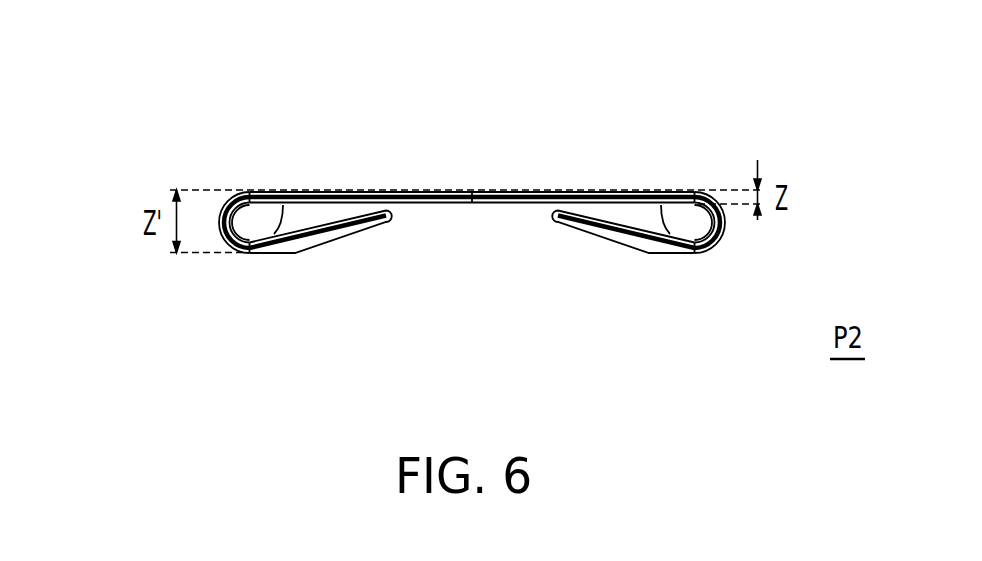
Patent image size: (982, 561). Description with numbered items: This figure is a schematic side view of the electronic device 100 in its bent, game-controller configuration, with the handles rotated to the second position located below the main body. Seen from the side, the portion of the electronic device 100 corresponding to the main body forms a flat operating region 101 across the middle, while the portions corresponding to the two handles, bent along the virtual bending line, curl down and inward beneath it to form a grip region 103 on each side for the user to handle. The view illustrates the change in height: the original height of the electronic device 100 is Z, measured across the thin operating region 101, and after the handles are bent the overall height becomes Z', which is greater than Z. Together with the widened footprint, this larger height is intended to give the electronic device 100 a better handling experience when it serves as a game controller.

The electronic device 100 is at (191, 105).
The operating region 101 is at (513, 198).
The grip region 103 is at (320, 241).